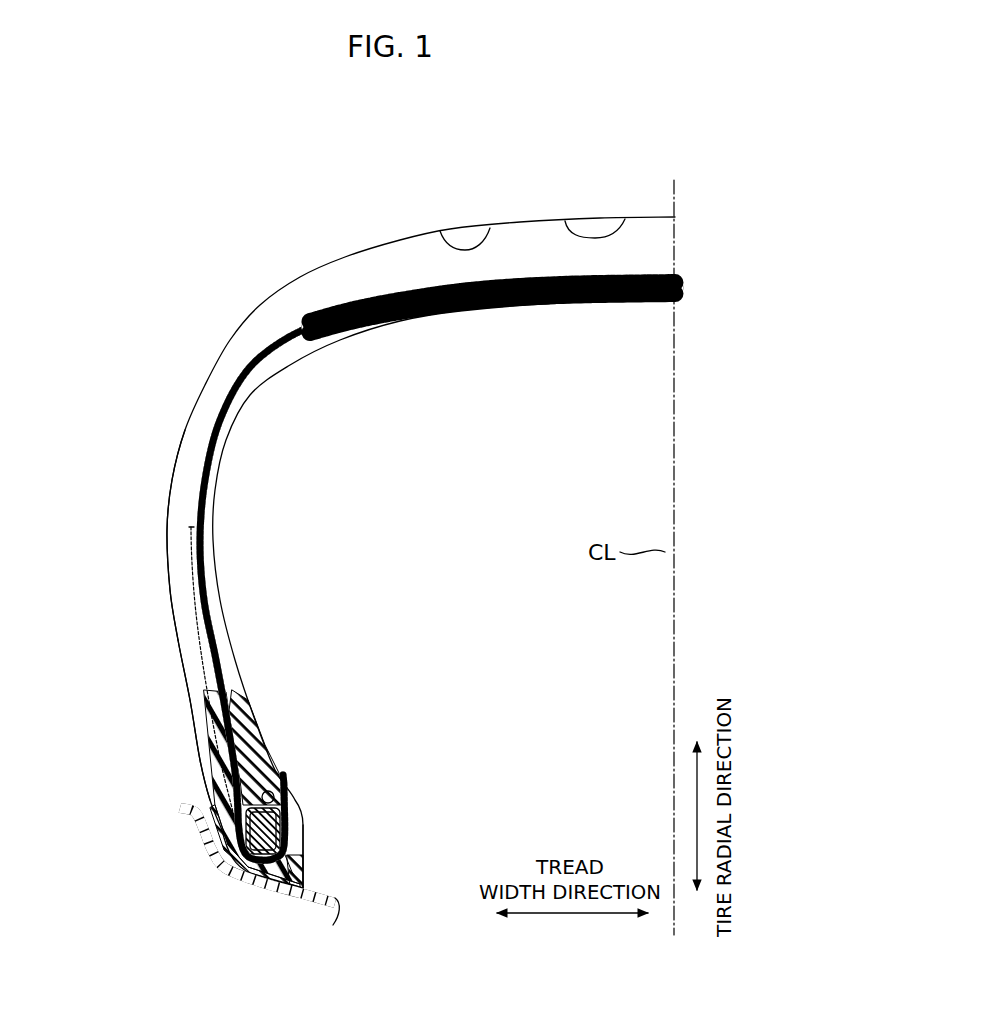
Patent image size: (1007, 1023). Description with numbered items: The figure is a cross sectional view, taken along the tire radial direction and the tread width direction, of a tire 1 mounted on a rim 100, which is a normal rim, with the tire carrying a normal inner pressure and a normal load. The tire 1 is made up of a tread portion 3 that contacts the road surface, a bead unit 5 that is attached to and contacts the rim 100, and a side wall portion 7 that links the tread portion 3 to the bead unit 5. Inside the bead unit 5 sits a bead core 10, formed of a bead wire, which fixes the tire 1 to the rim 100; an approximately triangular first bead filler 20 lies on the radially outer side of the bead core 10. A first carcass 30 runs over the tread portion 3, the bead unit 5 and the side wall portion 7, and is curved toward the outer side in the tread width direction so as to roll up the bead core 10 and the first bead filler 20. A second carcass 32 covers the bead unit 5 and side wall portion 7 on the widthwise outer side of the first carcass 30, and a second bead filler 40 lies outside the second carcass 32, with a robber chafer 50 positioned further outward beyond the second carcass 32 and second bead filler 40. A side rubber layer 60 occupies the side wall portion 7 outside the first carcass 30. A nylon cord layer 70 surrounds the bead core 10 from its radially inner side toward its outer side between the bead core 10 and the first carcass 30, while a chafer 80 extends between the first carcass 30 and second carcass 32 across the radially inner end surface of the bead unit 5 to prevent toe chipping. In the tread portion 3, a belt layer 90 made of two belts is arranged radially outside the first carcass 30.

The tire 1 is at (190, 184).
The tread portion 3 is at (546, 212).
The bead unit 5 is at (146, 806).
The side wall portion 7 is at (138, 521).
The bead core 10 is at (262, 840).
The first bead filler 20 is at (283, 776).
The first carcass 30 is at (236, 385).
The second carcass 32 is at (195, 606).
The second bead filler 40 is at (207, 740).
The robber chafer 50 is at (213, 768).
The side rubber layer 60 is at (192, 680).
The nylon cord layer 70 is at (274, 795).
The chafer 80 is at (298, 870).
The belt layer 90 is at (303, 326).
The rim 100 is at (290, 905).